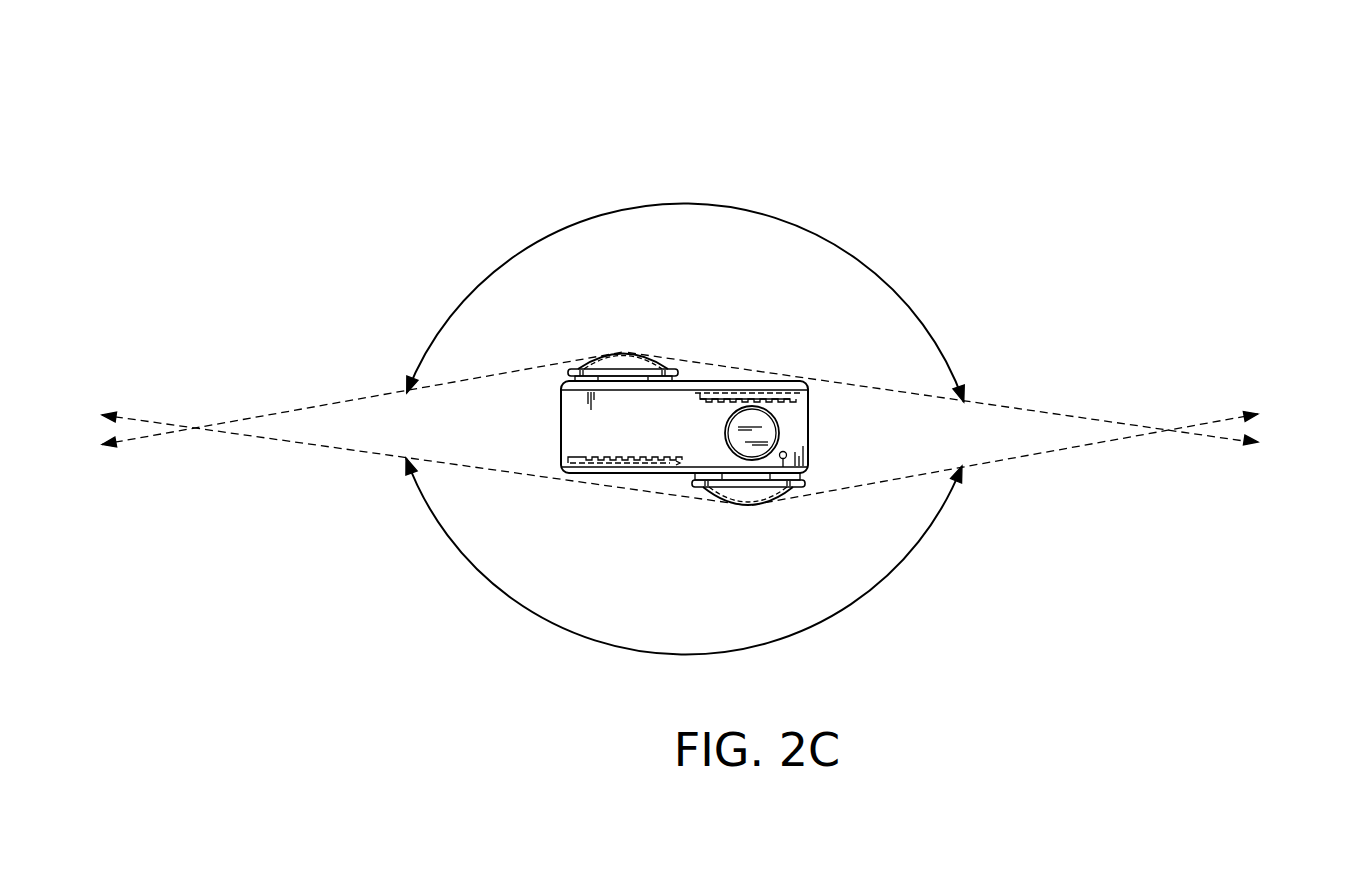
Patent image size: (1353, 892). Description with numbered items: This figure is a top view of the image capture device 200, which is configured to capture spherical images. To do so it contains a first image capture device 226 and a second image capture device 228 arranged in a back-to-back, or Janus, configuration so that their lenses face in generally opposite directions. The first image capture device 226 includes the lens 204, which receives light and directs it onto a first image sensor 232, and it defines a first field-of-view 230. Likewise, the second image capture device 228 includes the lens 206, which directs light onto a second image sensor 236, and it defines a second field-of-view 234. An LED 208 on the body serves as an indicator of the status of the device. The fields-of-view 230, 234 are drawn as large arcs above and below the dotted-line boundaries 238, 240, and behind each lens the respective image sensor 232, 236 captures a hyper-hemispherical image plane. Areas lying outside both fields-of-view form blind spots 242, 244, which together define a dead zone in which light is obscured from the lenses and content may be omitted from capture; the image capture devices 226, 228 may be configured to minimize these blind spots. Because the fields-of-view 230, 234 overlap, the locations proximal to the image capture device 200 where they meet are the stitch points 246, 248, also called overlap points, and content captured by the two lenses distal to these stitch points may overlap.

The image capture device 200 is at (1181, 158).
The camera lens 204 is at (648, 358).
The camera lens 206 is at (727, 504).
The LED 208 is at (783, 458).
The first image capture device 226 is at (619, 342).
The second image capture device 228 is at (759, 515).
The first field-of-view 230 is at (798, 228).
The first image sensor 232 is at (598, 460).
The second field-of-view 234 is at (618, 645).
The second image sensor 236 is at (773, 393).
The boundary 238 is at (1117, 422).
The boundary 240 is at (1078, 447).
The blind spot 242 is at (480, 452).
The blind spot 244 is at (875, 461).
The stitch point 246 is at (195, 430).
The stitch point 248 is at (1170, 432).